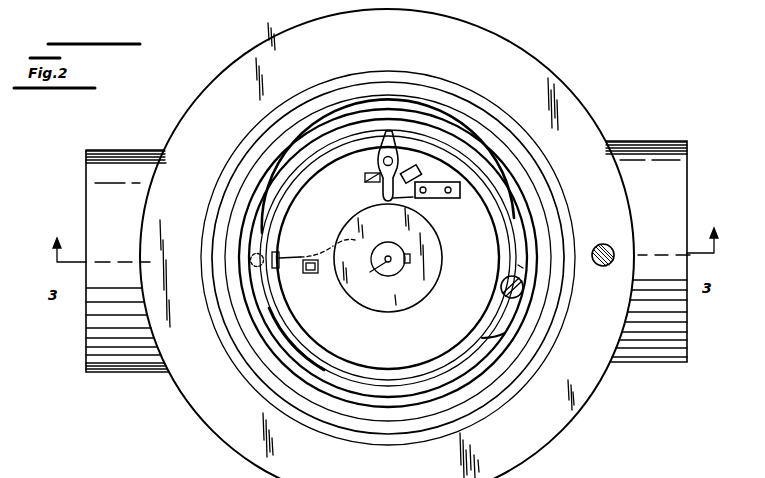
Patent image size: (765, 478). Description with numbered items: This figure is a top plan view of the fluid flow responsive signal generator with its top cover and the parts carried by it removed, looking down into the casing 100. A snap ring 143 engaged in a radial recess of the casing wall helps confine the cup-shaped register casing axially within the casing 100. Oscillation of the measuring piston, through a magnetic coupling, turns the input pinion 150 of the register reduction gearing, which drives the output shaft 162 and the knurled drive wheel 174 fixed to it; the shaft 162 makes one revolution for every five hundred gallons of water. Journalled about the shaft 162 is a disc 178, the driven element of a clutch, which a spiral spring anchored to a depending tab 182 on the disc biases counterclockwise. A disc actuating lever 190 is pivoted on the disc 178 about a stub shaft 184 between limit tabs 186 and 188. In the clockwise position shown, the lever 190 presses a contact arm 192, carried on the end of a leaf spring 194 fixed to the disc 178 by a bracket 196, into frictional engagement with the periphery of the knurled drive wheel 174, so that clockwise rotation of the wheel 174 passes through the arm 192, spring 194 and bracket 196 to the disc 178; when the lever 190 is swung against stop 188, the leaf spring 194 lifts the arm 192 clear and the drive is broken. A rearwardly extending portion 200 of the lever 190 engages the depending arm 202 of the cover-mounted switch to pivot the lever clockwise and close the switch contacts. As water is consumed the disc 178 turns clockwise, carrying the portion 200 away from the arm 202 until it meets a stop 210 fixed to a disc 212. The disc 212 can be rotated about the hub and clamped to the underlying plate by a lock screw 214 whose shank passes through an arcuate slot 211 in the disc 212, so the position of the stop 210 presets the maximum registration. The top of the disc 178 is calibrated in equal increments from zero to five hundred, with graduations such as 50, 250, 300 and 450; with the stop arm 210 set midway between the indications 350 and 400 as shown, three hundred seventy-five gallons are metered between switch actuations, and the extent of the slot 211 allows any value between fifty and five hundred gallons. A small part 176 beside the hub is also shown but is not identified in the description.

The switch block 50 is at (420, 174).
The casing 100 is at (490, 214).
The snap ring 143 is at (212, 210).
The input pinion 150 is at (495, 293).
The shaft 162 is at (382, 267).
The knurled drive wheel 174 is at (443, 262).
The stop 176 is at (407, 264).
The disc 178 is at (490, 250).
The depending tab 182 is at (372, 264).
The stub shaft 184 is at (383, 161).
The limit tab 186 is at (368, 184).
The limit tab 188 is at (398, 137).
The disc actuating lever 190 is at (413, 168).
The contact arm 192 is at (388, 203).
The leaf spring 194 is at (412, 199).
The bracket 196 is at (460, 190).
The rearwardly extending portion 200 is at (455, 345).
The depending arm 202 is at (388, 131).
The stop 210 is at (280, 256).
The arcuate slot 211 is at (490, 340).
The disc 212 is at (522, 266).
The lock screw 214 is at (524, 292).
The ring 250 is at (388, 370).
The ring 300 is at (324, 345).
The scale indication 350 is at (285, 290).
The scale indication 400 is at (288, 214).
The ring 450 is at (316, 166).